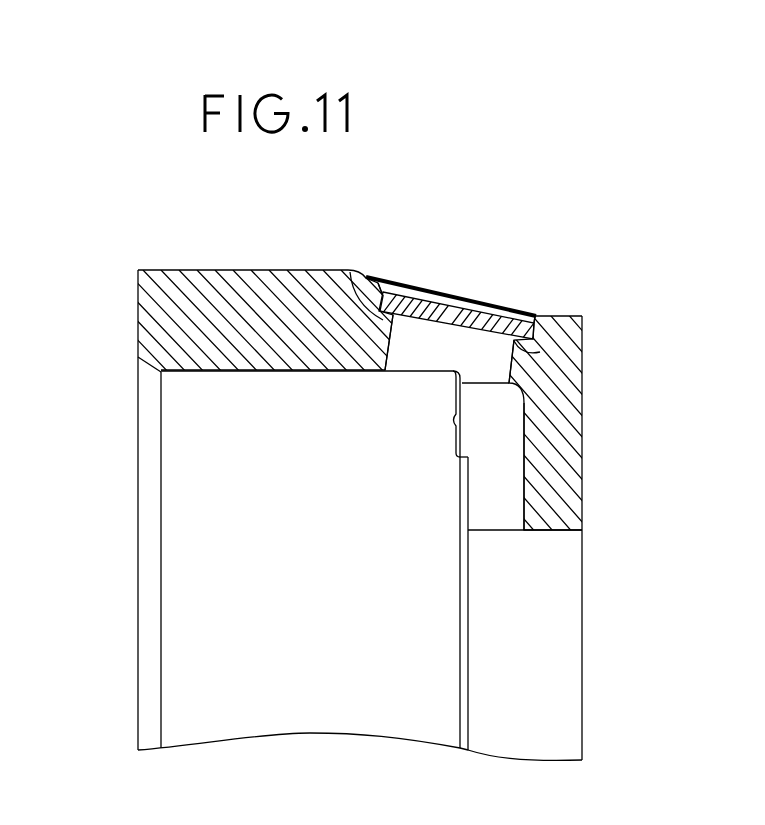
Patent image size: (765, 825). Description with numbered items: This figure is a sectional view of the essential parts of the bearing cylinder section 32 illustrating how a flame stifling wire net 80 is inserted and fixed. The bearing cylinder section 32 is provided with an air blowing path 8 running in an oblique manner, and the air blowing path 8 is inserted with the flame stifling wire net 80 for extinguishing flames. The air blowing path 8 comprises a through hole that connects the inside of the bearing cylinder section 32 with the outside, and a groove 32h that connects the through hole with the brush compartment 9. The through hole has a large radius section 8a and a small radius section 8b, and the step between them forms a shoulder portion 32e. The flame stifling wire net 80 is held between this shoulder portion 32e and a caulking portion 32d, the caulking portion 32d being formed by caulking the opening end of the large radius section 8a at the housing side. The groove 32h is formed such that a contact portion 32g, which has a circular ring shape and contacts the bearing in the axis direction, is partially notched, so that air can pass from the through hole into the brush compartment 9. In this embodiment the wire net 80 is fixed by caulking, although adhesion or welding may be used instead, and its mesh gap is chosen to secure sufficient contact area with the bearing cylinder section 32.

The bearing cylinder section 32 is at (267, 262).
The shoulder portion 32e is at (340, 296).
The caulking portion 32d is at (376, 283).
The air blowing path 8 is at (500, 363).
The large radius section 8a is at (444, 300).
The small radius section 8b is at (462, 347).
The flame stifling wire net 80 is at (508, 315).
The groove 32h is at (505, 447).
The brush compartment 9 is at (560, 600).
The contact portion 32g is at (436, 424).